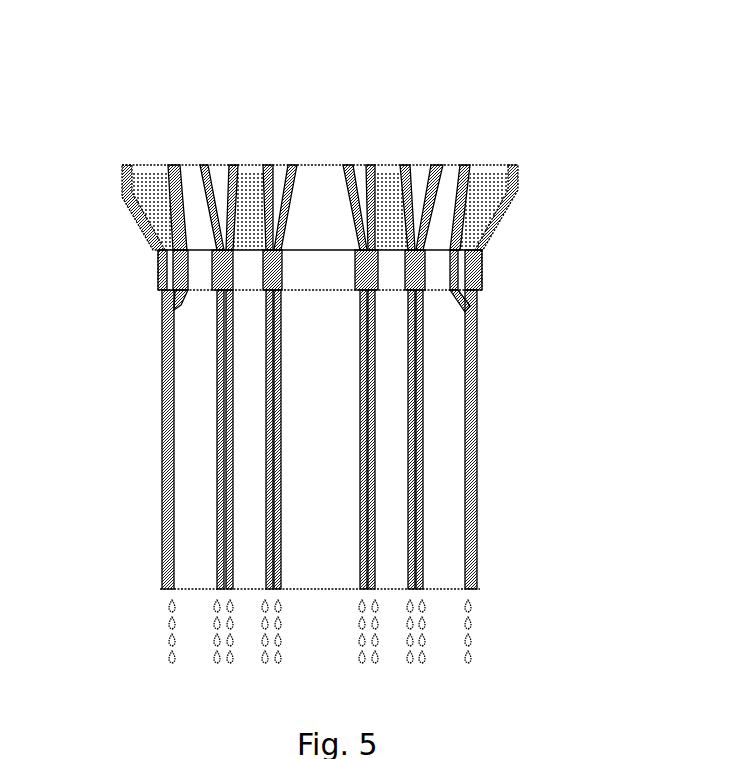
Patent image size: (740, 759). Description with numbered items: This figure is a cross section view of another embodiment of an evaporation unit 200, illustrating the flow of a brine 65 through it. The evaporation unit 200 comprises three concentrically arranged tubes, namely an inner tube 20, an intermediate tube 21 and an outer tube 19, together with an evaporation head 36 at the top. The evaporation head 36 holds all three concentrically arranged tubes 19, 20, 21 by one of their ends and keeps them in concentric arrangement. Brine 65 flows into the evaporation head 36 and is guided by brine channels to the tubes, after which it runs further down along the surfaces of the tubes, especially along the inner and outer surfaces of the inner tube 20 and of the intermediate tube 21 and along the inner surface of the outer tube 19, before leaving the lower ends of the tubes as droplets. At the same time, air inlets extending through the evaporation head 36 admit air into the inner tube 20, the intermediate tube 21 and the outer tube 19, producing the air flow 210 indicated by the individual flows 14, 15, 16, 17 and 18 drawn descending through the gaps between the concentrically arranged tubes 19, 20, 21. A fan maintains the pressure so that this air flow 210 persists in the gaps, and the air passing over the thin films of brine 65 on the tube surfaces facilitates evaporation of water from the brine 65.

The evaporation unit 200 is at (401, 35).
The air flow 210 is at (497, 90).
The air flow 14 is at (200, 372).
The air flow 15 is at (244, 412).
The air flow 16 is at (322, 452).
The air flow 17 is at (395, 412).
The air flow 18 is at (440, 374).
The brine 65 is at (145, 190).
The evaporation head 36 is at (508, 220).
The outer tube 19 is at (477, 425).
The inner tube 20 is at (275, 493).
The intermediate tube 21 is at (228, 510).